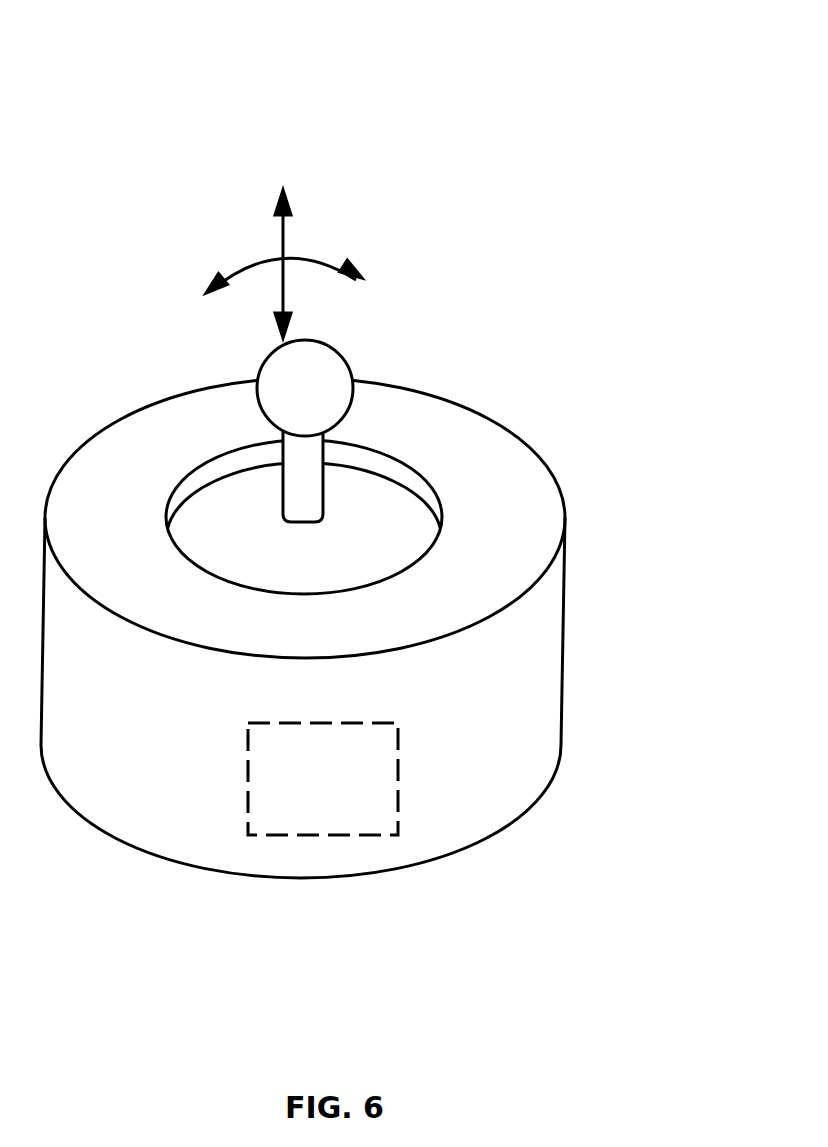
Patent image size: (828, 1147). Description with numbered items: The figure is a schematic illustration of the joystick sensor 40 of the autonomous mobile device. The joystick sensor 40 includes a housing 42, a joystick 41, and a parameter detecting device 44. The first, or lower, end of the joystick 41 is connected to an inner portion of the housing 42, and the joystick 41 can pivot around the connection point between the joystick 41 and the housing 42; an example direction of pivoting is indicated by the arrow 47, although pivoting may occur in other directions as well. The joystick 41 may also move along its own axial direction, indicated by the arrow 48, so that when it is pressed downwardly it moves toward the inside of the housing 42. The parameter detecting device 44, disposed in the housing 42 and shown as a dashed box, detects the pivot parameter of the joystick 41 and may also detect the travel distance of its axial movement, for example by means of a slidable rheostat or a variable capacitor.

The joystick sensor 40 is at (429, 128).
The joystick 41 is at (295, 380).
The housing 42 is at (465, 457).
The parameter detecting device 44 is at (393, 748).
The arrow 47 is at (240, 268).
The arrow 48 is at (283, 240).